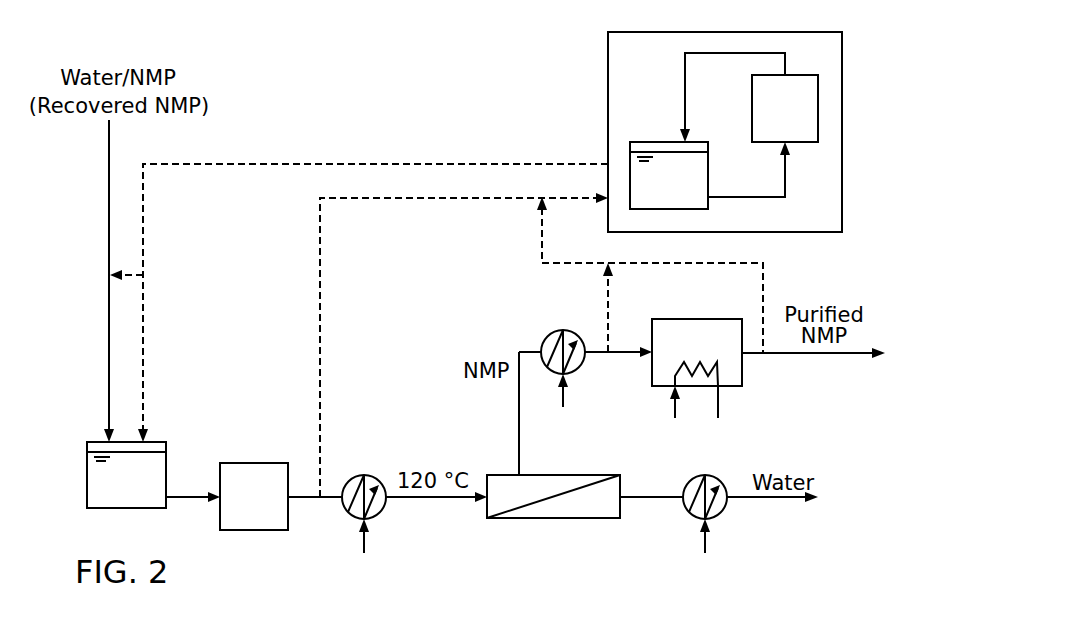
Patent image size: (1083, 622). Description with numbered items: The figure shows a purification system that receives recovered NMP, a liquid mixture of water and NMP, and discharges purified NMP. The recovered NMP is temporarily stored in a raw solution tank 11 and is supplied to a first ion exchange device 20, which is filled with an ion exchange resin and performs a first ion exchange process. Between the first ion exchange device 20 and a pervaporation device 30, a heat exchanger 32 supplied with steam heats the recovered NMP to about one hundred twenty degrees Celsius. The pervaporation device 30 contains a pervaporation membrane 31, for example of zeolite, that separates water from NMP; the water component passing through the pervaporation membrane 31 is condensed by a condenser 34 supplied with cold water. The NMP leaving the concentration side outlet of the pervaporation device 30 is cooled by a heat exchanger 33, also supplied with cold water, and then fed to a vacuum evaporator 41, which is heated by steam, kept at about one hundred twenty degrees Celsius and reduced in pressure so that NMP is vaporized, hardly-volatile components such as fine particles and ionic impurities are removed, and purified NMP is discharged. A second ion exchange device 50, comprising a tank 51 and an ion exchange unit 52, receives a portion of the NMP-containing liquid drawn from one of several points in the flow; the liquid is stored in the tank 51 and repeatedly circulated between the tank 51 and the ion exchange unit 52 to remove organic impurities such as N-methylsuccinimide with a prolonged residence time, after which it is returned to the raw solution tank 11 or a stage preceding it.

The raw solution tank 11 is at (157, 445).
The first ion exchange device 20 is at (275, 467).
The pervaporation device 30 is at (559, 498).
The pervaporation membrane 31 is at (530, 503).
The heat exchanger 32 is at (371, 478).
The heat exchanger 33 is at (548, 342).
The condenser 34 is at (715, 482).
The vacuum evaporator 41 is at (738, 377).
The second ion exchange device 50 is at (613, 55).
The tank 51 is at (703, 174).
The ion exchange unit 52 is at (758, 92).